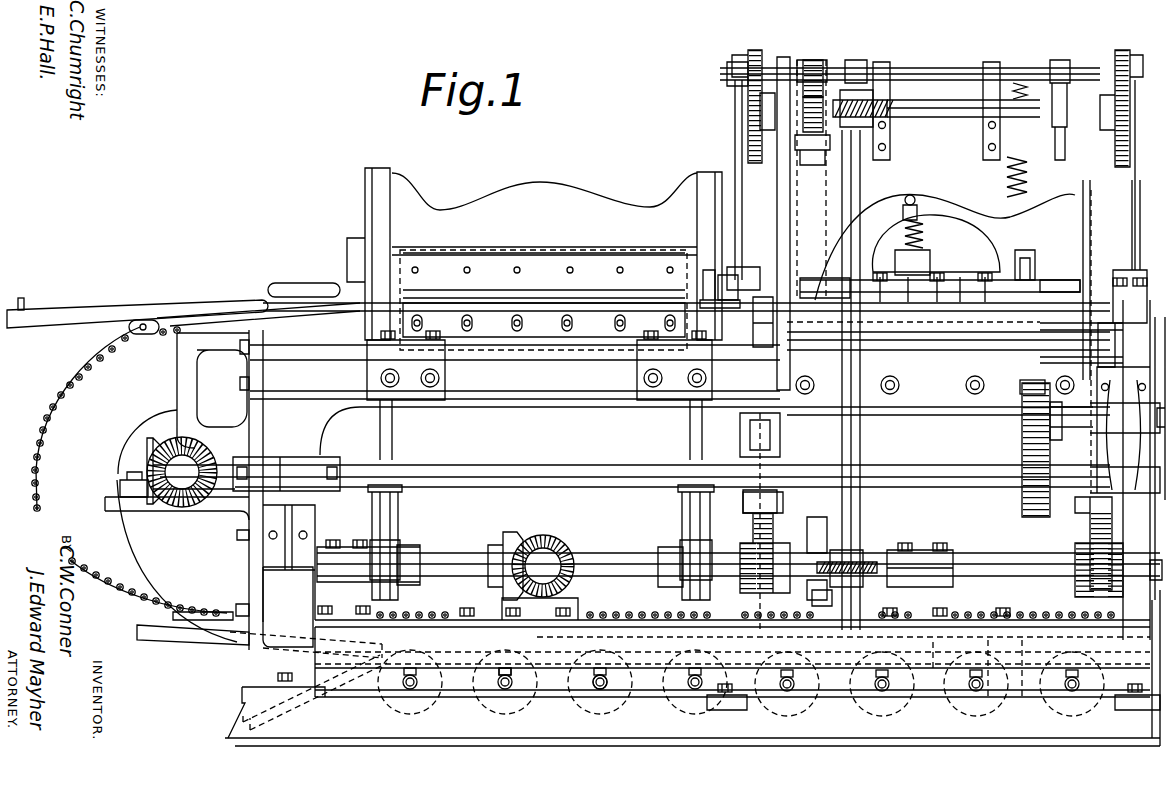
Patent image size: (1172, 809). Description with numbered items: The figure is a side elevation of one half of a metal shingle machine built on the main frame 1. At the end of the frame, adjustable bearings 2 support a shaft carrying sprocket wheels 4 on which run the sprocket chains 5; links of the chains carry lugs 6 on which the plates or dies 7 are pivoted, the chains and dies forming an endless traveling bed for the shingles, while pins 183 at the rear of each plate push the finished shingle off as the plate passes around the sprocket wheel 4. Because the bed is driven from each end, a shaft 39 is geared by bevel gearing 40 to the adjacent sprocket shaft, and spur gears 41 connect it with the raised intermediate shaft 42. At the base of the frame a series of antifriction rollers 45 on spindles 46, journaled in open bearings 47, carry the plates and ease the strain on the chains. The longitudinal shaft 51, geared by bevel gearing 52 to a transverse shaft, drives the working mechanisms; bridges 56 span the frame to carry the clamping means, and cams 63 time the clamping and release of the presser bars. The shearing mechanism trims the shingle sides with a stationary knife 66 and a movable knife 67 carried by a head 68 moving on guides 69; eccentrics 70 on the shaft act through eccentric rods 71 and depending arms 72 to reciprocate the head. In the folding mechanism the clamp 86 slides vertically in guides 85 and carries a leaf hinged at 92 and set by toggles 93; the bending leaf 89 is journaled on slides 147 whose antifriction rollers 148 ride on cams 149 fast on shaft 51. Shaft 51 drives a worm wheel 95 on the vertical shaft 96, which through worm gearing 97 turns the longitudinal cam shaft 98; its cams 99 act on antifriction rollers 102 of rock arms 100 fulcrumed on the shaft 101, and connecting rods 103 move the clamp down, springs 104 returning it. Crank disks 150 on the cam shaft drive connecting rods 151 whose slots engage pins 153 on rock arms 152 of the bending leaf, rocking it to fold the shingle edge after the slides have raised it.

The main frame 1 is at (573, 407).
The adjustable bearings 2 is at (120, 488).
The sprocket wheels 4 is at (80, 397).
The sprocket chains 5 is at (99, 357).
The lugs 6 is at (152, 322).
The plates or dies 7 is at (102, 305).
The shafts 39 is at (895, 470).
The bevel gearing 40 is at (160, 505).
The spur gears 41 is at (1022, 447).
The intermediate shaft 42 is at (1070, 428).
The antifriction rollers 45 is at (530, 705).
The spindles 46 is at (505, 690).
The open bearings 47 is at (606, 686).
The longitudinal shaft 51 is at (600, 555).
The bevel gearing 52 is at (532, 538).
The bridges 56 is at (926, 260).
The cams 63 is at (818, 606).
The stationary knife 66 is at (525, 305).
The movable knife 67 is at (473, 293).
The head 68 is at (560, 192).
The guides 69 is at (365, 197).
The eccentrics 70 is at (400, 506).
The eccentric rods 71 is at (393, 437).
The depending arms 72 is at (412, 309).
The guides 85 is at (778, 215).
The clamp 86 is at (992, 235).
The bending leaf 89 is at (1020, 310).
The hinge 92 is at (1010, 300).
The toggles 93 is at (1035, 275).
The worm wheel 95 is at (880, 562).
The vertical shaft 96 is at (862, 513).
The worm gearing 97 is at (895, 120).
The longitudinal cam shaft 98 is at (948, 117).
The cams 99 is at (808, 110).
The rock arms 100 is at (805, 65).
The shaft 101 is at (925, 68).
The antifriction rollers 102 is at (818, 60).
The connecting rods 103 is at (795, 143).
The springs 104 is at (1010, 182).
The slides 147 is at (1108, 352).
The antifriction rollers 148 is at (1097, 520).
The cams 149 is at (1090, 560).
The crank disks 150 is at (752, 55).
The connecting rods 151 is at (735, 97).
The rock arms 152 is at (718, 290).
The pins 153 is at (728, 305).
The pins 183 is at (22, 305).